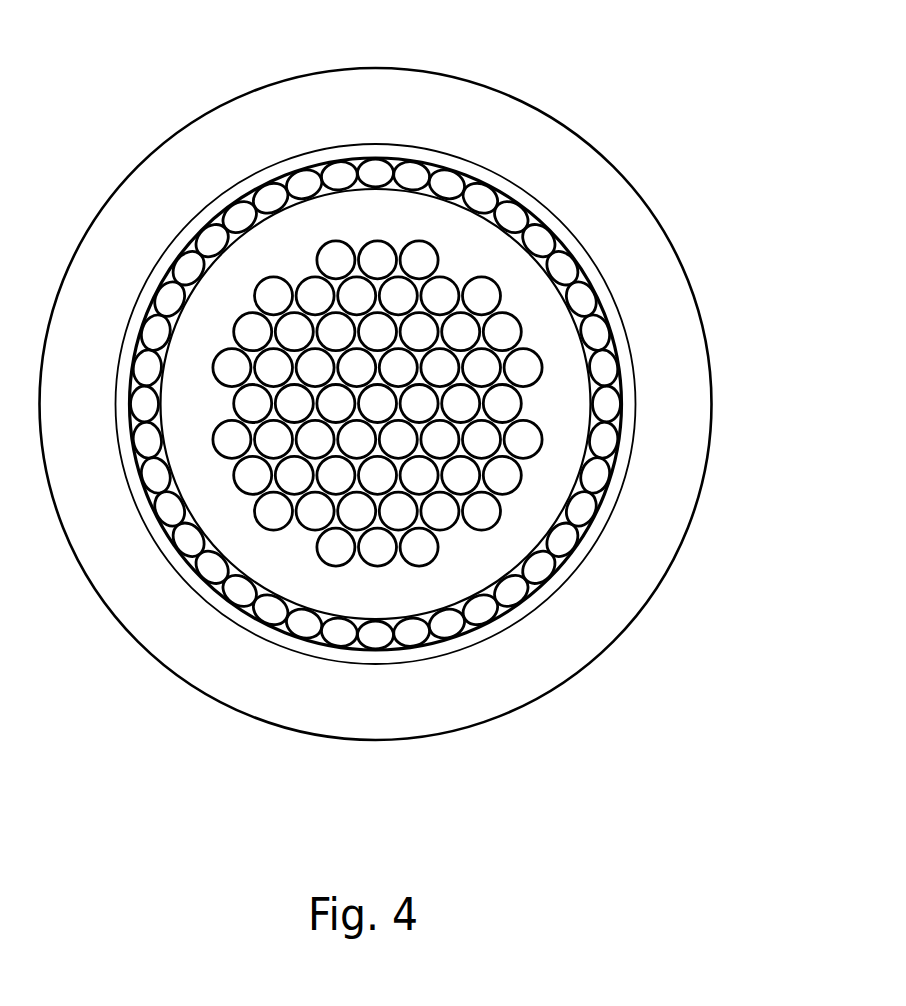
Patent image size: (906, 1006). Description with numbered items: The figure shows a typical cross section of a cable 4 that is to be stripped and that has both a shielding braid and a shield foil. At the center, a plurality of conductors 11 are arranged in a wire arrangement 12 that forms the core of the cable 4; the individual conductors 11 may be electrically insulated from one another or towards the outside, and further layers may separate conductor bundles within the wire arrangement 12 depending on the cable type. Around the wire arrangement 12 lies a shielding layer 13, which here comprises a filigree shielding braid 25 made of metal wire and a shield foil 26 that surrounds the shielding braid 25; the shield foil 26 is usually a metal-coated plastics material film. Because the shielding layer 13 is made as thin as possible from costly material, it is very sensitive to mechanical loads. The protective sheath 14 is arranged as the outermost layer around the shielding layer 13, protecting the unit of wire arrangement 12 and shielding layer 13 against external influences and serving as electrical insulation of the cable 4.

The cable 4 is at (411, 370).
The conductor 11 is at (501, 404).
The wire arrangement 12 is at (560, 458).
The shielding layer 13 is at (566, 208).
The protective sheath 14 is at (378, 404).
The shielding braid 25 is at (213, 240).
The shield foil 26 is at (233, 195).